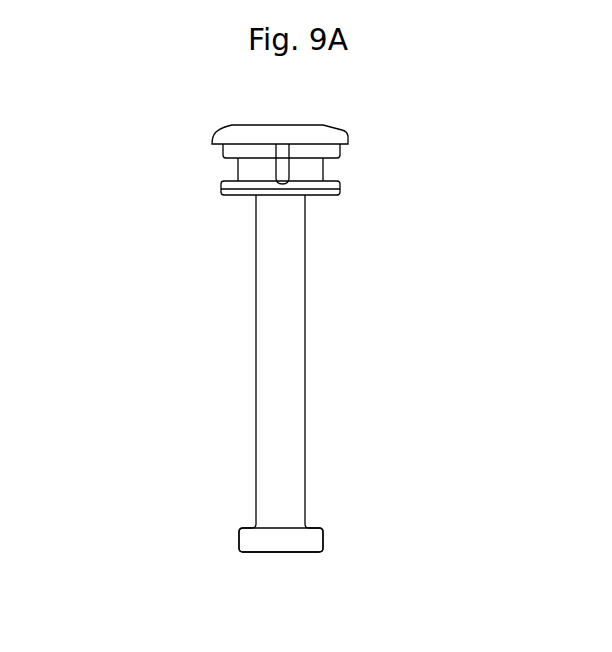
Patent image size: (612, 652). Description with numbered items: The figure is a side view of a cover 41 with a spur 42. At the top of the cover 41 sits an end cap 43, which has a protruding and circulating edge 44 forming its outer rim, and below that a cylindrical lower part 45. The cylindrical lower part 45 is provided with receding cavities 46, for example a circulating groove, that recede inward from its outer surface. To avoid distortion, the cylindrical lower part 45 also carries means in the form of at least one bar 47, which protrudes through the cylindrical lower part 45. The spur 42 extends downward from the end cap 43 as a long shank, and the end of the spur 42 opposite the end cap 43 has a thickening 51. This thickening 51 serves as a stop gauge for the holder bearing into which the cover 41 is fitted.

The cover 41 is at (393, 127).
The spur 42 is at (330, 552).
The end cap 43 is at (262, 134).
The protruding and circulating edge 44 is at (214, 141).
The cylindrical lower part 45 is at (351, 148).
The receding cavities 46 is at (232, 169).
The bar 47 is at (282, 162).
The thickening 51 is at (243, 538).